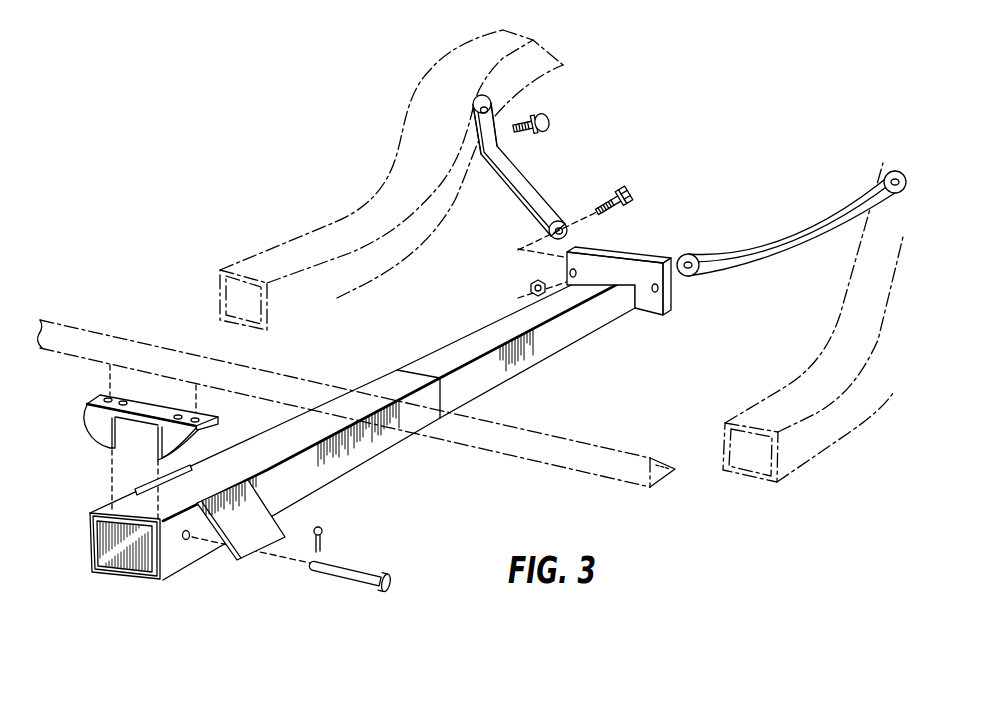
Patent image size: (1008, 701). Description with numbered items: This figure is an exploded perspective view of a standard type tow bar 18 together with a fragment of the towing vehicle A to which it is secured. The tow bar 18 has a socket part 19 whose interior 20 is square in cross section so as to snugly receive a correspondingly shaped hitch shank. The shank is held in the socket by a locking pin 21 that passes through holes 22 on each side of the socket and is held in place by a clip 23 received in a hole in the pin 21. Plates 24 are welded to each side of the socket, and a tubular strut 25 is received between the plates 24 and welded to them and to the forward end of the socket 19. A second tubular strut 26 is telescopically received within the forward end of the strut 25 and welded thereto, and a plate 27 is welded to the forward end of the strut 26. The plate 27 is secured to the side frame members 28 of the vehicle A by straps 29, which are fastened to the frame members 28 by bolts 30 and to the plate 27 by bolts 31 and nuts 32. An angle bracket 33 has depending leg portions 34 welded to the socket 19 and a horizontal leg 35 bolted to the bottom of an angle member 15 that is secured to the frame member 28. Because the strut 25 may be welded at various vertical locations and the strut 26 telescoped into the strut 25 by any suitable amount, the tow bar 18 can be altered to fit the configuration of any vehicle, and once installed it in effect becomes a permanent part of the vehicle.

The angle member 15 is at (609, 396).
The tow bar 18 is at (357, 438).
The socket part 19 is at (187, 550).
The interior 20 is at (134, 559).
The locking pin 21 is at (363, 578).
The holes 22 is at (192, 541).
The clip 23 is at (324, 533).
The plates 24 is at (270, 518).
The tubular strut 25 is at (362, 425).
The tubular strut 26 is at (568, 338).
The plate 27 is at (613, 262).
The side frame members 28 is at (268, 252).
The straps 29 is at (533, 197).
The bolts 30 is at (549, 127).
The bolts 31 is at (627, 190).
The nuts 32 is at (529, 286).
The angle bracket 33 is at (125, 425).
The depending leg portions 34 is at (104, 441).
The horizontal leg 35 is at (93, 399).
The towing vehicle A is at (561, 256).